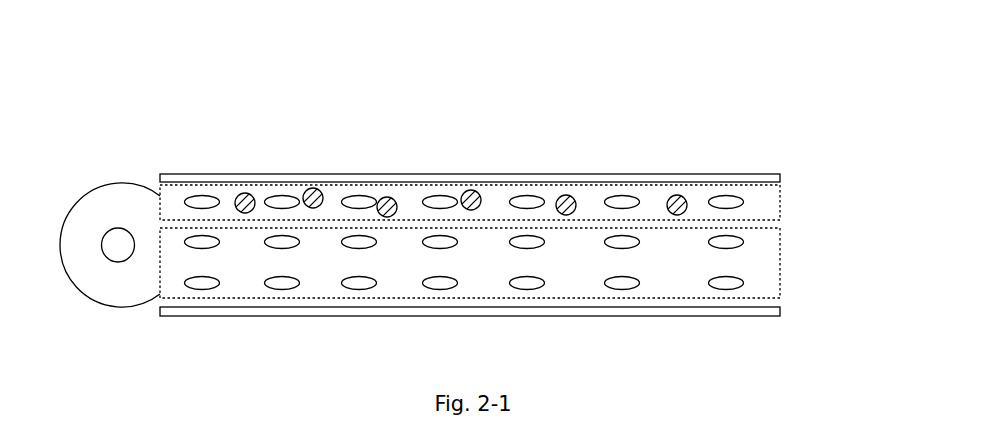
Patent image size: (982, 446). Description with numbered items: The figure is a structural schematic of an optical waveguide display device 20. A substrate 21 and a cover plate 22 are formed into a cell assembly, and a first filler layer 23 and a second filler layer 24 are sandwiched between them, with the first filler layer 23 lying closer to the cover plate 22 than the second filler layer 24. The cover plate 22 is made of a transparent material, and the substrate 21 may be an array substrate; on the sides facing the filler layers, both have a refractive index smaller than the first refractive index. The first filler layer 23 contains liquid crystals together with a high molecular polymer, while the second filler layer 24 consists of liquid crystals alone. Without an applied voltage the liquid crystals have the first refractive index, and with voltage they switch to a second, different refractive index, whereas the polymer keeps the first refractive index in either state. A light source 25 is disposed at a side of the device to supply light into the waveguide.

The optical waveguide display device 20 is at (443, 50).
The substrate 21 is at (745, 317).
The cover plate 22 is at (778, 175).
The first filler layer 23 is at (780, 204).
The second filler layer 24 is at (780, 270).
The light source 25 is at (87, 194).